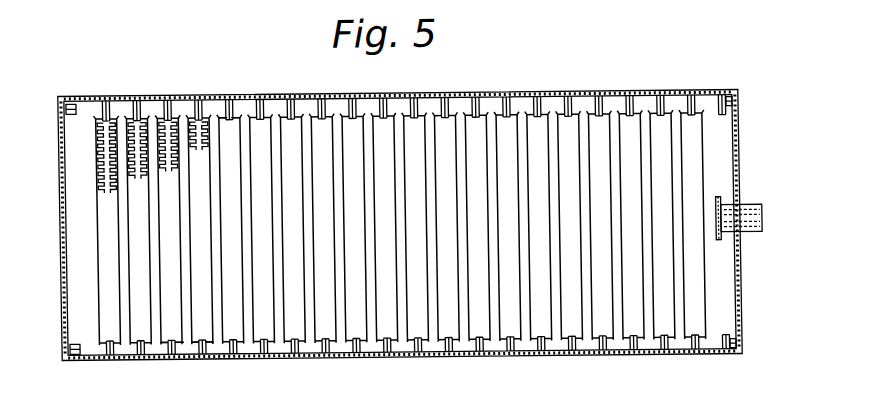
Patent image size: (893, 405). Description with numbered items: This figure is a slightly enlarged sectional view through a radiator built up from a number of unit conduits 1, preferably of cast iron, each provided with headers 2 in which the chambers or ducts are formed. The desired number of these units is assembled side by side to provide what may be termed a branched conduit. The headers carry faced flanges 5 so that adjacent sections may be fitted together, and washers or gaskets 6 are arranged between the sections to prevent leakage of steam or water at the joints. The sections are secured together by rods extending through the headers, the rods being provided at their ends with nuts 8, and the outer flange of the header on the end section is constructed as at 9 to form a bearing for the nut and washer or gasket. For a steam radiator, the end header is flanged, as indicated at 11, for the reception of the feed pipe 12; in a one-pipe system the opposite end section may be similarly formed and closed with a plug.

The conduit 1 is at (370, 337).
The headers 2 is at (487, 94).
The faced flanges 5 is at (402, 93).
The washers or gaskets 6 is at (233, 94).
The nuts 8 is at (727, 93).
The bearing for the nut and washer 9 is at (720, 95).
The flange 11 is at (743, 252).
The feed pipe 12 is at (747, 217).